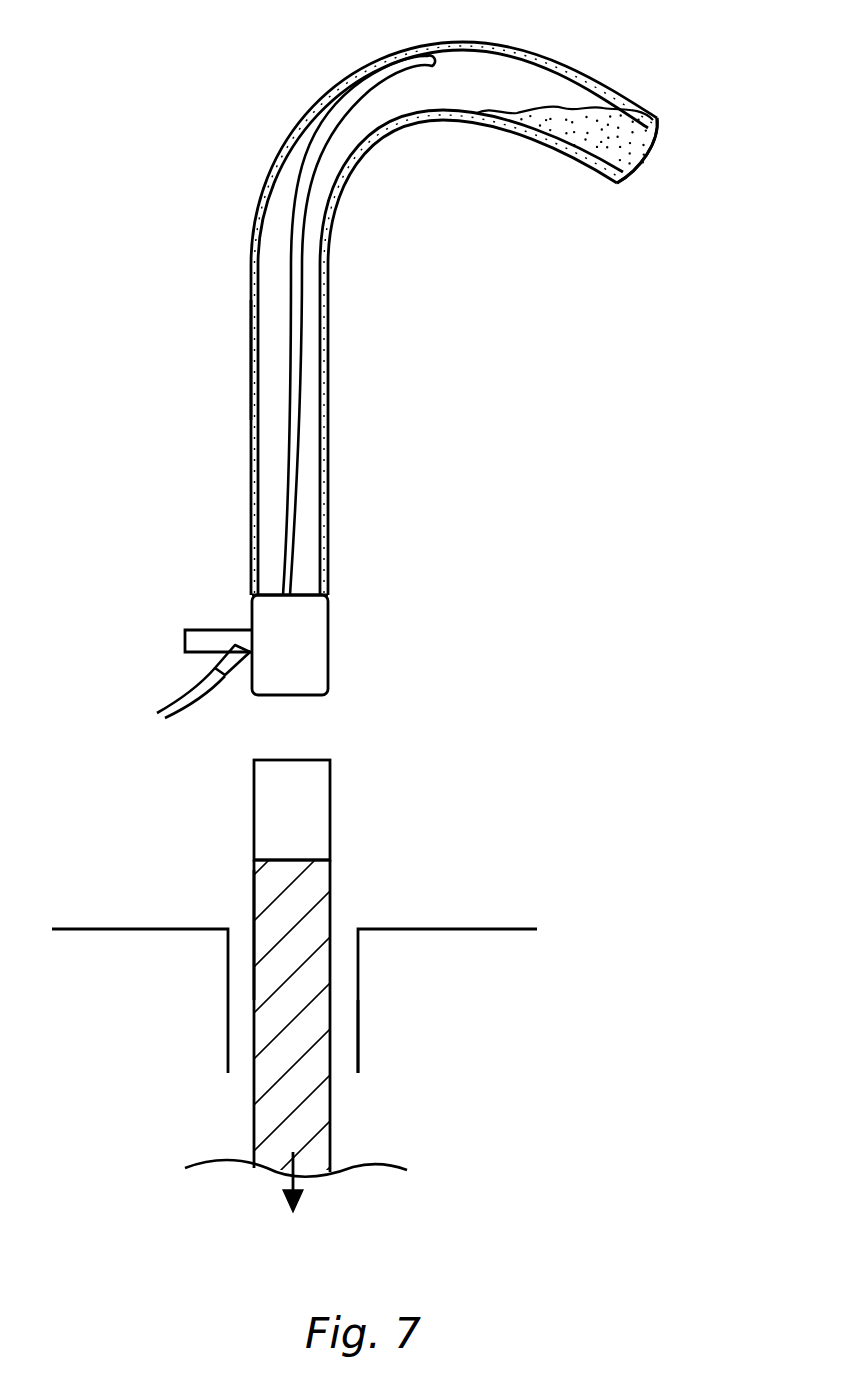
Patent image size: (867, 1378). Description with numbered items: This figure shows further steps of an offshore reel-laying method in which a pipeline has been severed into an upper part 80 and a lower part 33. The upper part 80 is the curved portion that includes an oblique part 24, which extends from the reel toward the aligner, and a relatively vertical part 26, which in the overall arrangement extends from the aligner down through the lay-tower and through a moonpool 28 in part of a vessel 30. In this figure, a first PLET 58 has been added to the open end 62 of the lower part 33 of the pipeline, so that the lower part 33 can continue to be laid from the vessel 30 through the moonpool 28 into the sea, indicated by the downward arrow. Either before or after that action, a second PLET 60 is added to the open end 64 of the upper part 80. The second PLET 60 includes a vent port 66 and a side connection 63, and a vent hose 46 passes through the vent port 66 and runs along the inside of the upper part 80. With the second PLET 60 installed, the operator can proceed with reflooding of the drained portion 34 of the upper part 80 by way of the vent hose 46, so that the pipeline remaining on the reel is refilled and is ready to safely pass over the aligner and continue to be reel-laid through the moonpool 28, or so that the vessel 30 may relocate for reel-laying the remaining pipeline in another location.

The oblique part 24 is at (600, 92).
The vertical part 26 is at (327, 382).
The moonpool 28 is at (358, 1040).
The vessel 30 is at (513, 929).
The lower part 33 is at (254, 907).
The drained portion 34 is at (273, 347).
The vent hose 46 is at (293, 320).
The first PLET 58 is at (330, 812).
The second PLET 60 is at (328, 637).
The open end 62 is at (340, 862).
The side port 63 is at (207, 632).
The open end 64 is at (328, 595).
The vent port 66 is at (218, 660).
The upper part 80 is at (241, 162).